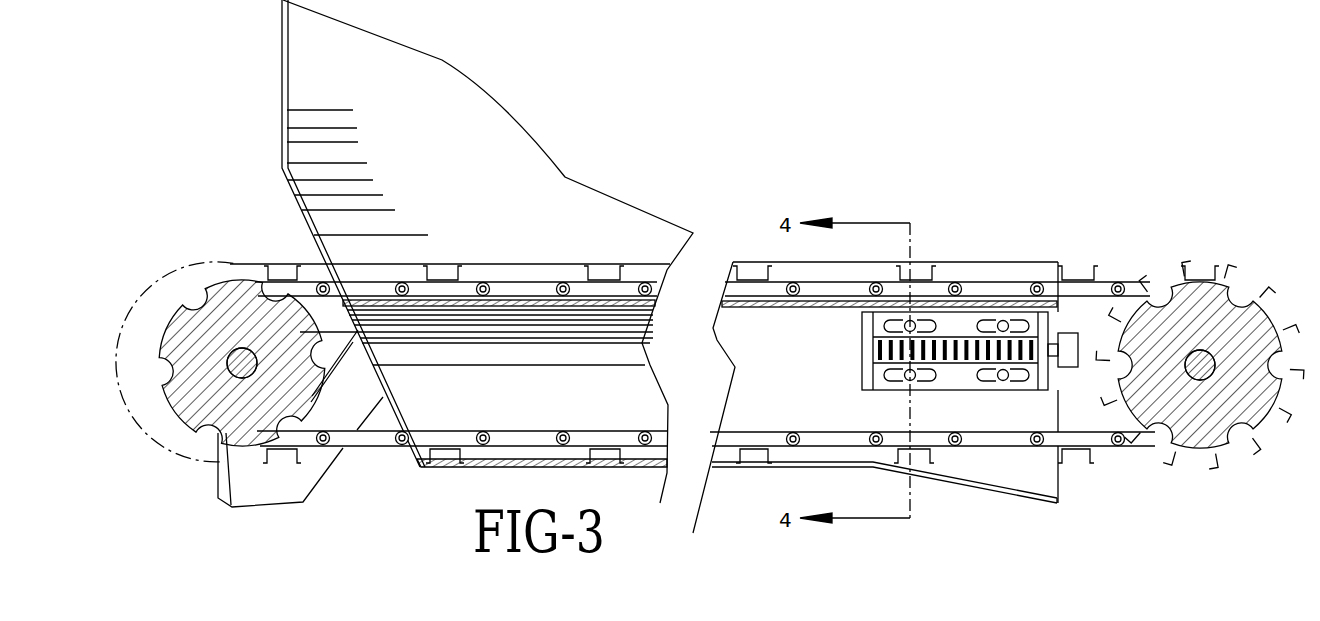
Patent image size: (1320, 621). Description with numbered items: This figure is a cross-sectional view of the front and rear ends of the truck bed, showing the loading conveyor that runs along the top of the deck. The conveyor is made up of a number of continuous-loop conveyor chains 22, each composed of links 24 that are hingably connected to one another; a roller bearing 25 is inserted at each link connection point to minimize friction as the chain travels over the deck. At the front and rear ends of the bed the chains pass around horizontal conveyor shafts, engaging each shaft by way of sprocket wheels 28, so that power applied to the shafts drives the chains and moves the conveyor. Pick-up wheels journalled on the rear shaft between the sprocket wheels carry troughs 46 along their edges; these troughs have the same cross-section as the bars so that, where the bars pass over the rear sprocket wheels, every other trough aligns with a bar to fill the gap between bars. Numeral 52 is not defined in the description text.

The conveyor chain 22 is at (1116, 452).
The link 24 is at (997, 292).
The roller bearing 25 is at (222, 368).
The sprocket wheel 28 is at (235, 430).
The trough 46 is at (1200, 270).
The hopper 52 is at (879, 4).